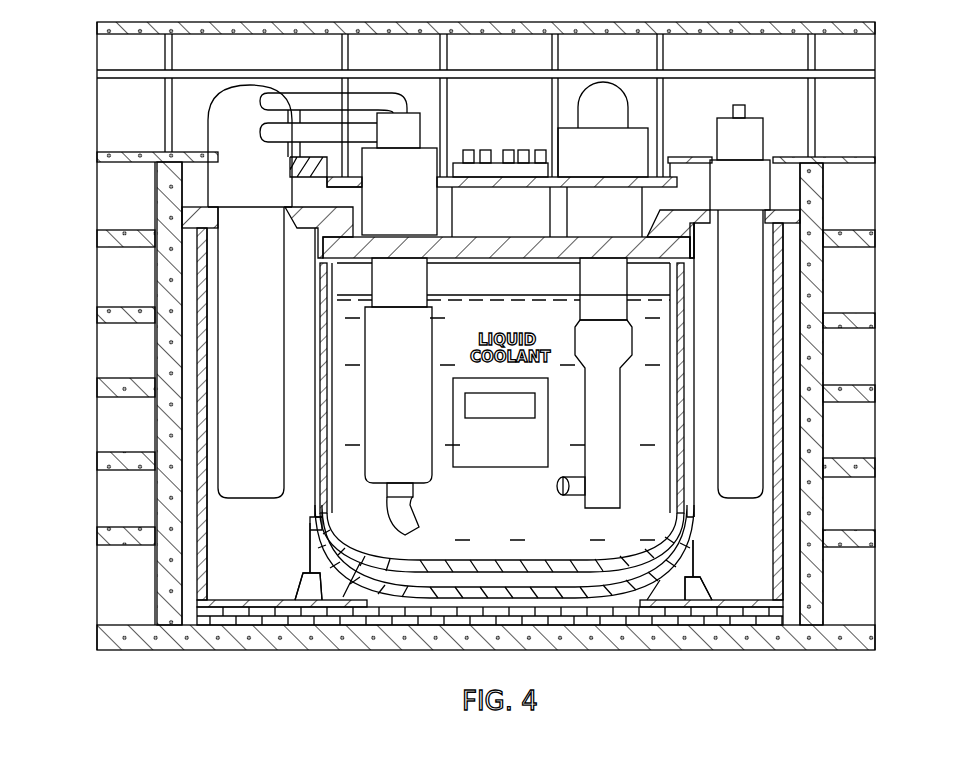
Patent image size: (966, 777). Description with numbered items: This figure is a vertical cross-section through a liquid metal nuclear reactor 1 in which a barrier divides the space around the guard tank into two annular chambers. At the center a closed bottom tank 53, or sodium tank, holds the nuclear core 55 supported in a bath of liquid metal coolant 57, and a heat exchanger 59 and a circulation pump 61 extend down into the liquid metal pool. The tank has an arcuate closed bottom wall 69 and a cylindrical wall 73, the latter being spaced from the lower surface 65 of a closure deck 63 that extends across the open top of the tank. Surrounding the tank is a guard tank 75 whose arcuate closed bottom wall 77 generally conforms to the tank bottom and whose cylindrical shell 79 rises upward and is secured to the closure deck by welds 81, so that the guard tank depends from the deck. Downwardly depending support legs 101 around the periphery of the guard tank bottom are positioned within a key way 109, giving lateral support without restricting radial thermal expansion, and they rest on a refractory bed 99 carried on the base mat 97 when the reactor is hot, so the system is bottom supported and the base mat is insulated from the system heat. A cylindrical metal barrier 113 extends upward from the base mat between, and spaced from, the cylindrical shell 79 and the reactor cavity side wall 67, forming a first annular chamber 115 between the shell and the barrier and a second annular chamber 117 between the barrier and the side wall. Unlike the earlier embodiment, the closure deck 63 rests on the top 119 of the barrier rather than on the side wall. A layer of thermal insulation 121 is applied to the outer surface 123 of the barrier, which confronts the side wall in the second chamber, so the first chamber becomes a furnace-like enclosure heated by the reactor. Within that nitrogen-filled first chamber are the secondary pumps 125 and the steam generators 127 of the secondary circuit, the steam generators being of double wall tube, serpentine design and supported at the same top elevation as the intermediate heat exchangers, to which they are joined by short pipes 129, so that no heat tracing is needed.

The nuclear reactor plant 1 is at (926, 109).
The closed bottom tank 53 is at (341, 474).
The nuclear core 55 is at (511, 452).
The liquid metal coolant 57 is at (466, 305).
The heat exchanger 59 is at (409, 371).
The circulation pump 61 is at (613, 444).
The closure deck 63 is at (507, 233).
The lower surface 65 is at (518, 260).
The reactor cavity side wall 67 is at (157, 424).
The arcuate closed bottom wall 69 is at (497, 560).
The cylindrical wall 73 is at (335, 370).
The guard tank 75 is at (694, 503).
The arcuate closed bottom wall 77 is at (610, 596).
The cylindrical shell 79 is at (313, 470).
The welds 81 is at (697, 242).
The base mat 97 is at (275, 626).
The refractory bed 99 is at (335, 618).
The support legs 101 is at (683, 568).
The key way 109 is at (702, 594).
The barrier 113 is at (206, 272).
The first annular chamber 115 is at (266, 551).
The second annular chamber 117 is at (183, 500).
The top 119 is at (788, 240).
The thermal insulation 121 is at (783, 591).
The surface 123 is at (785, 553).
The secondary pumps 125 is at (750, 409).
The steam generators 127 is at (266, 361).
The short pipes 129 is at (318, 130).